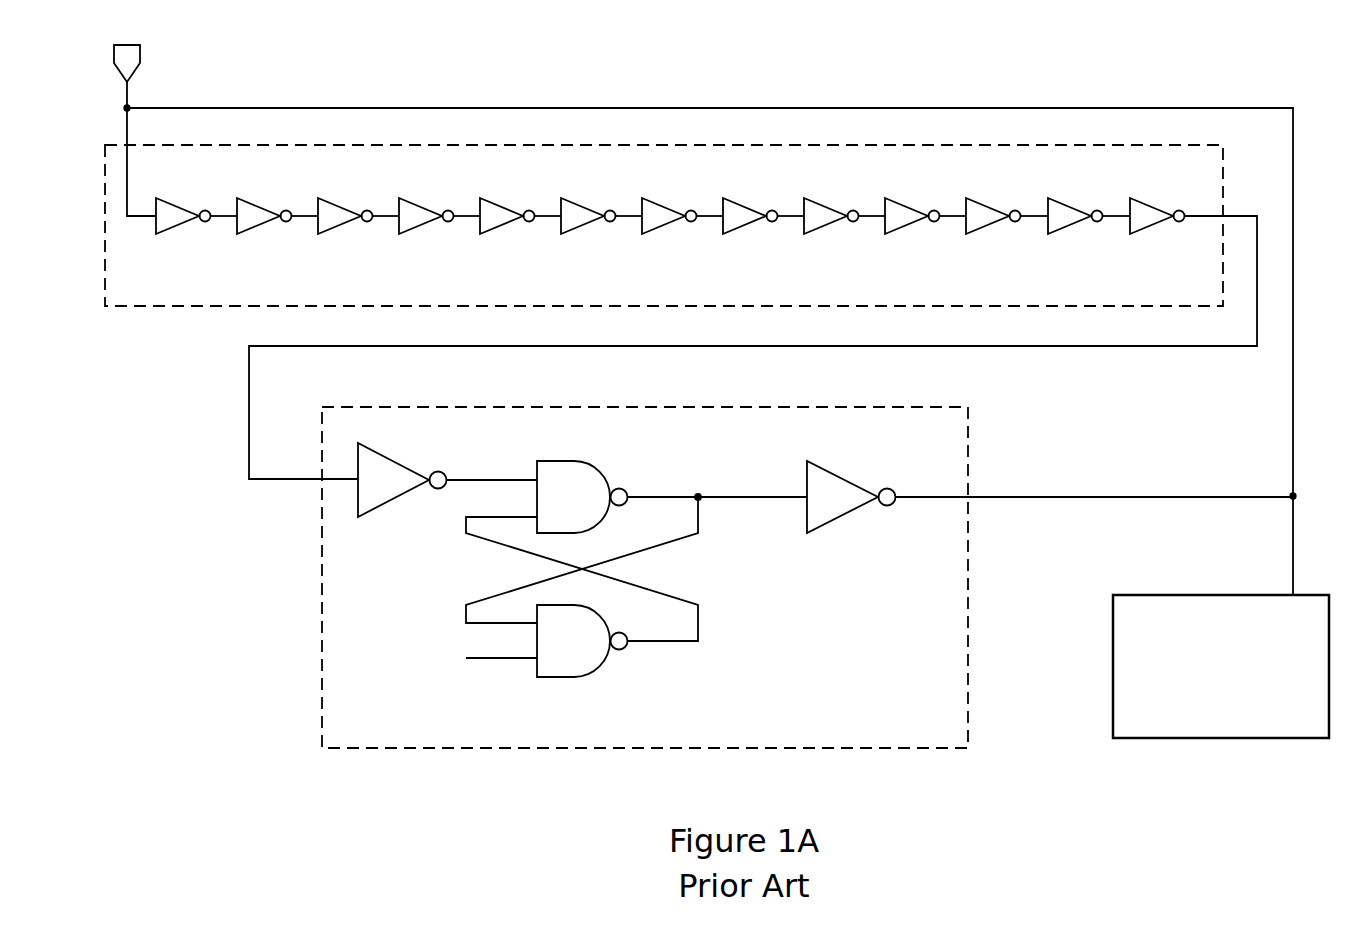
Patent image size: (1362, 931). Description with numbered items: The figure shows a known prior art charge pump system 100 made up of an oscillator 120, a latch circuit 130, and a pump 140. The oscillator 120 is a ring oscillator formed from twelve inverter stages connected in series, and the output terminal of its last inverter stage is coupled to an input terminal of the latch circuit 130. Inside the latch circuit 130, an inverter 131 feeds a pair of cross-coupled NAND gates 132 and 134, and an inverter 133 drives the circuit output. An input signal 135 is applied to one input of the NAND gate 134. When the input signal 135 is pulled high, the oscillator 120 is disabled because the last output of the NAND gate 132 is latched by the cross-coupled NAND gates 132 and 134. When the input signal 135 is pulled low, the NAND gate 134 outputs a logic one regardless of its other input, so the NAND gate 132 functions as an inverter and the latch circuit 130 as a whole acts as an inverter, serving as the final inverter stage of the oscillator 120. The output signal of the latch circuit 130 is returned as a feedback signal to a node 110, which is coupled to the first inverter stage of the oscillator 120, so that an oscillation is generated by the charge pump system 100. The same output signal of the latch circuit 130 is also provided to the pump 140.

The charge pump system 100 is at (1110, 94).
The node 110 is at (157, 130).
The oscillator 120 is at (681, 312).
The latch circuit 130 is at (807, 577).
The inverter 131 is at (395, 500).
The NAND gate 132 is at (591, 460).
The inverter 133 is at (843, 473).
The NAND gate 134 is at (568, 680).
The input signal 135 is at (477, 657).
The pump 140 is at (1221, 666).